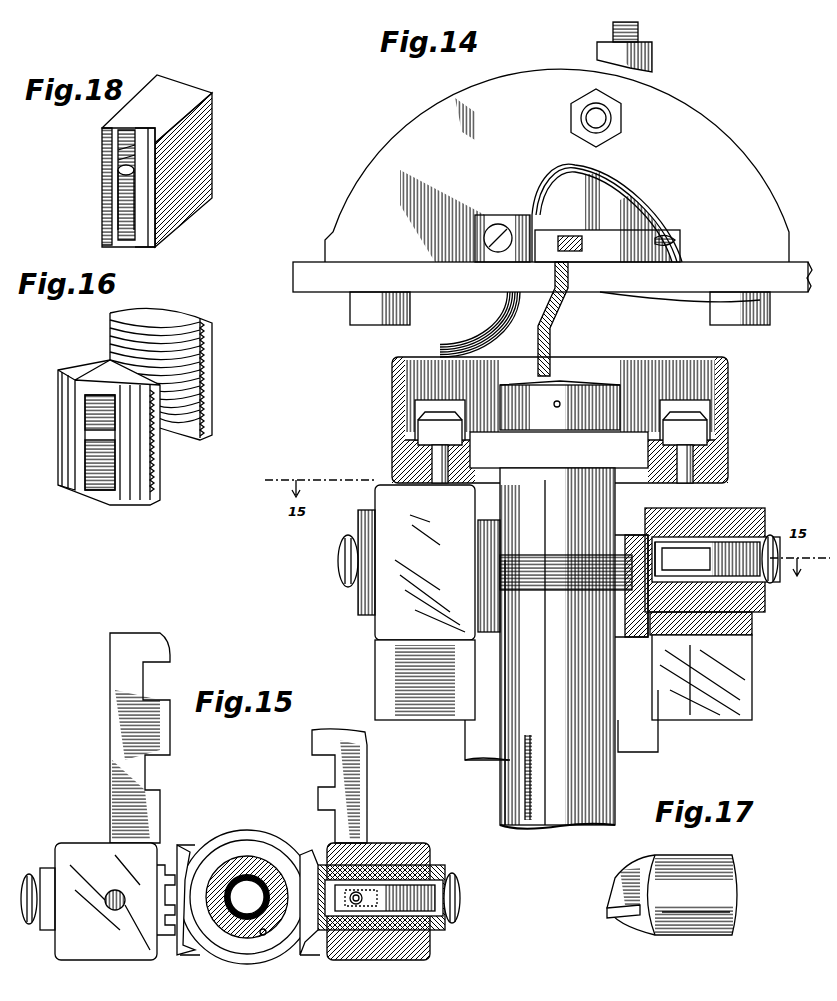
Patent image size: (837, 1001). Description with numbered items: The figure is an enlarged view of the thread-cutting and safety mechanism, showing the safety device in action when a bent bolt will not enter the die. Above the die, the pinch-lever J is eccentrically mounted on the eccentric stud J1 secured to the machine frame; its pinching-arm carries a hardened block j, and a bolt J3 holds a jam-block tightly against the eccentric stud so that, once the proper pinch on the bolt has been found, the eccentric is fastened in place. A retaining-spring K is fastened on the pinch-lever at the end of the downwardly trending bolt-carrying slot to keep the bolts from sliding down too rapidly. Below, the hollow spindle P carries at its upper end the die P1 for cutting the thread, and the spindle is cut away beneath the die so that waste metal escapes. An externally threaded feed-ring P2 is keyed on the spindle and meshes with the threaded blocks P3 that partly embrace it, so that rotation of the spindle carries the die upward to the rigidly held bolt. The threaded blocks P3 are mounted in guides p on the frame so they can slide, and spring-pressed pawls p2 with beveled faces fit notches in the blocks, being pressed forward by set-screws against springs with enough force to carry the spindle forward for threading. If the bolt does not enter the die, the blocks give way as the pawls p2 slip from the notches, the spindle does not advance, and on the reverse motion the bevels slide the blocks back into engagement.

In FIG. 14, the eccentric stud J1 is at (612, 36).
In FIG. 14, the bolt J3 is at (588, 118).
In FIG. 14, the pinch-lever J is at (607, 213).
In FIG. 14, the hardened block j is at (680, 245).
In FIG. 14, the retaining-spring K is at (556, 252).
In FIG. 14, the die P1 is at (620, 404).
In FIG. 14, the hollow spindle P is at (557, 648).
In FIG. 15, the hollow spindle P is at (232, 926).
In FIG. 14, the threaded feed-ring P2 is at (562, 590).
In FIG. 15, the threaded feed-ring P2 is at (253, 840).
In FIG. 14, the threaded blocks P3 is at (490, 633).
In FIG. 15, the threaded blocks P3 is at (180, 864).
In FIG. 16, the threaded blocks P3 is at (90, 375).
In FIG. 14, the guides p is at (360, 598).
In FIG. 15, the guides p is at (448, 928).
In FIG. 18, the guides p is at (157, 161).
In FIG. 14, the spring-pressed pawls p2 is at (716, 559).
In FIG. 15, the spring-pressed pawls p2 is at (358, 906).
In FIG. 17, the spring-pressed pawls p2 is at (728, 885).